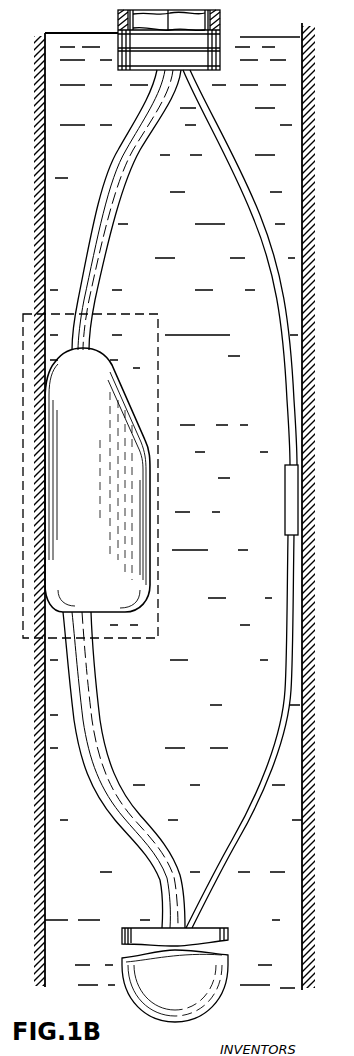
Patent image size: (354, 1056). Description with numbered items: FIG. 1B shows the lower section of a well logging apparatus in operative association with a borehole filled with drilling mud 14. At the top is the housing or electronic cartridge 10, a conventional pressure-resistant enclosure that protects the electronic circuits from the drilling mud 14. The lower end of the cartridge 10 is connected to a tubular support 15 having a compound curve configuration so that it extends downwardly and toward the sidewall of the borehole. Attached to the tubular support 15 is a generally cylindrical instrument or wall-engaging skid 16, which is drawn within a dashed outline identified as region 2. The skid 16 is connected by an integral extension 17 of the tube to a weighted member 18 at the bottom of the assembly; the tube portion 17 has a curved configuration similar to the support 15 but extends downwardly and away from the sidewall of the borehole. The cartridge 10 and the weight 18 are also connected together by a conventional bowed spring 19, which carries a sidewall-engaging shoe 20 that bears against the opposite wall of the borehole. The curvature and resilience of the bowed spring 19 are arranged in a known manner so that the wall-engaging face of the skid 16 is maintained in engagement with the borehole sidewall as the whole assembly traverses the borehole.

The float assembly region 2 is at (143, 314).
The housing 10 is at (222, 38).
The drilling mud 14 is at (112, 108).
The tubular support 15 is at (114, 156).
The wall-engaging skid 16 is at (149, 396).
The integral extension 17 is at (100, 693).
The weighted member 18 is at (228, 938).
The bowed spring 19 is at (281, 360).
The sidewall-engaging shoe 20 is at (285, 482).